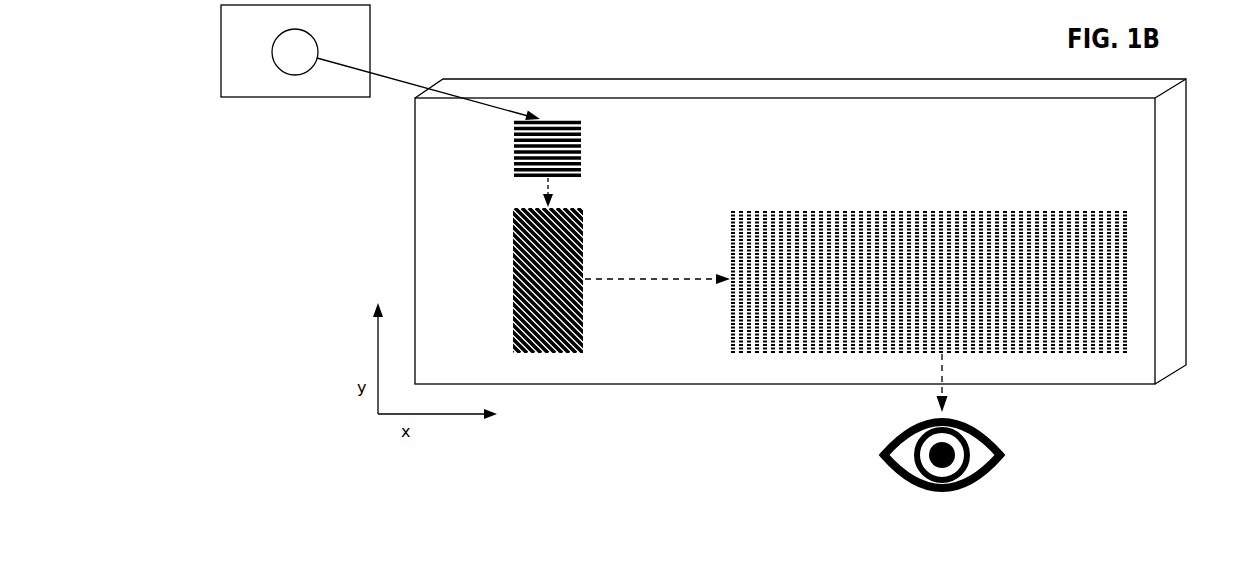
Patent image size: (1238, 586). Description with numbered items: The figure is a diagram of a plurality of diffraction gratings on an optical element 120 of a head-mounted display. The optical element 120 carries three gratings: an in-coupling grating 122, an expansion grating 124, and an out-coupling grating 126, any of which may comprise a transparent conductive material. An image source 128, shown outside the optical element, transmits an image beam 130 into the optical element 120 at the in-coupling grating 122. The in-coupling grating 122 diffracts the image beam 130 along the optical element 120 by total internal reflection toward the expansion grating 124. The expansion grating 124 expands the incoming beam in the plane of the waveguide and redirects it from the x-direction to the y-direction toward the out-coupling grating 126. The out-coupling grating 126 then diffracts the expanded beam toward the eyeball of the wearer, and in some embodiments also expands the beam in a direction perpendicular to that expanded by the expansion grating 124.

The optical element 120 is at (762, 53).
The in-coupling grating 122 is at (564, 164).
The expansion grating 124 is at (549, 280).
The out-coupling grating 126 is at (929, 268).
The image source 128 is at (221, 50).
The image beam 130 is at (428, 89).